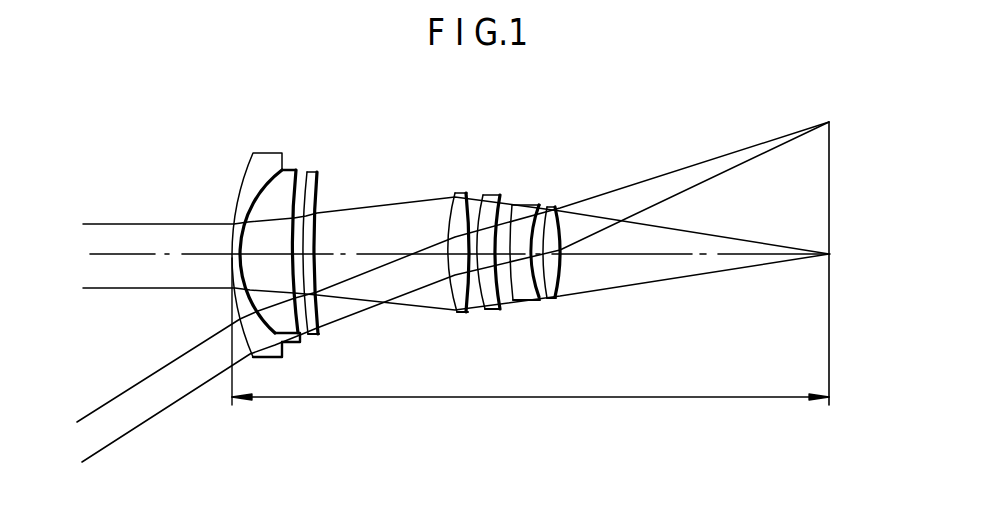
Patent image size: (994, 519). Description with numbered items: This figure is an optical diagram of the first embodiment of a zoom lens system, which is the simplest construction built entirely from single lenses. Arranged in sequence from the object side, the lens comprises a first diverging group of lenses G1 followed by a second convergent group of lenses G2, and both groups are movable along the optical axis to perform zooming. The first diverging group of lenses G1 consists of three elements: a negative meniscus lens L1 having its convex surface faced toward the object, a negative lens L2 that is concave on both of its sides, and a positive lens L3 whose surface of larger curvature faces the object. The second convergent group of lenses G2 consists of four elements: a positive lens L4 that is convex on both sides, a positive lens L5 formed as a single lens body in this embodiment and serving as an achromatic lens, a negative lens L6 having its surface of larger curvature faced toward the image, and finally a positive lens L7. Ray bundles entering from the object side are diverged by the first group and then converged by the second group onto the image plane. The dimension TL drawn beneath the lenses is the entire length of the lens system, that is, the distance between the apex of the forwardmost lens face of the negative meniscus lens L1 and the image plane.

The first diverging group of lenses G1 is at (348, 105).
The second convergent group of lenses G2 is at (443, 130).
The negative meniscus lens L1 is at (268, 160).
The negative lens L2 is at (294, 175).
The positive lens L3 is at (317, 175).
The positive lens L4 is at (460, 190).
The positive lens L5 is at (490, 195).
The negative lens L6 is at (526, 203).
The positive lens L7 is at (551, 207).
The entire length of the lens system TL is at (530, 331).